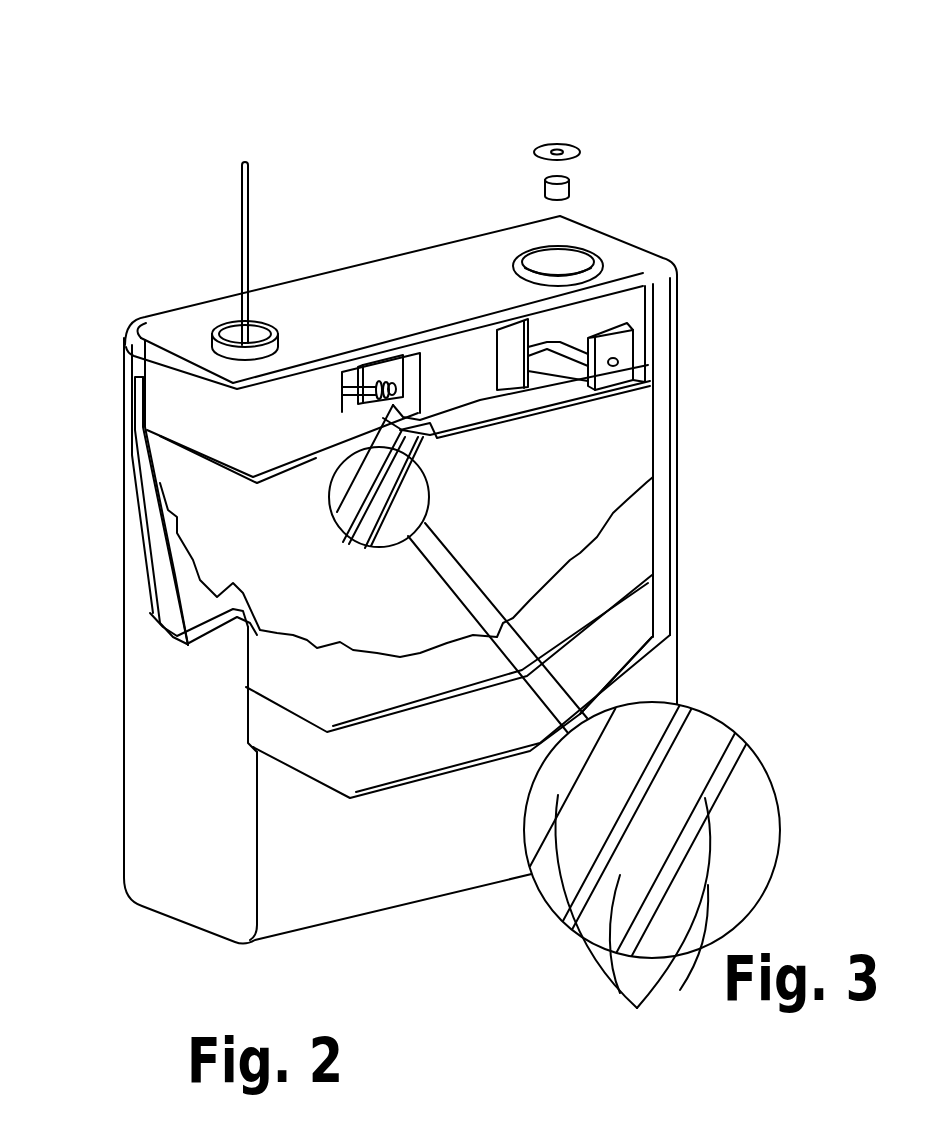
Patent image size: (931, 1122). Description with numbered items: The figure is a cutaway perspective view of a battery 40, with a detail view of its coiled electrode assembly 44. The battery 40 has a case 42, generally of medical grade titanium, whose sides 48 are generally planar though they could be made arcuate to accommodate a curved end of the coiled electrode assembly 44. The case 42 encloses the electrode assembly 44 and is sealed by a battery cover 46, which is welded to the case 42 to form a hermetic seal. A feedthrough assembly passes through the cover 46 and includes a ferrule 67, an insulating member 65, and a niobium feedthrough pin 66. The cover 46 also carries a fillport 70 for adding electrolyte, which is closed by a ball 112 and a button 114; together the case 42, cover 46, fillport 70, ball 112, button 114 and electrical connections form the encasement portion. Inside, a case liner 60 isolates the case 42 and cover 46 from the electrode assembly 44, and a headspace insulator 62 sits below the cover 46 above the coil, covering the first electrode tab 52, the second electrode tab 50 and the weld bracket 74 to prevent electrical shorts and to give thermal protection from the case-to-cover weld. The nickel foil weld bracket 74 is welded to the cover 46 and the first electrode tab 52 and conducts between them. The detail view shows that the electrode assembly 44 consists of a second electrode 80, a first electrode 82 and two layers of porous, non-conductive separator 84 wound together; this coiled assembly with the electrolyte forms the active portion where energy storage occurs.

In FIG. 2, the battery 40 is at (468, 85).
In FIG. 2, the case 42 is at (123, 793).
In FIG. 2, the electrode assembly 44 is at (587, 573).
In FIG. 2, the battery cover 46 is at (157, 338).
In FIG. 2, the sides 48 is at (283, 930).
In FIG. 2, the second electrode tab 50 is at (395, 375).
In FIG. 2, the first electrode tab 52 is at (600, 353).
In FIG. 2, the case liner 60 is at (610, 640).
In FIG. 2, the headspace insulator 62 is at (200, 423).
In FIG. 2, the insulating member 65 is at (230, 337).
In FIG. 2, the feedthrough pin 66 is at (248, 232).
In FIG. 2, the ferrule 67 is at (278, 337).
In FIG. 2, the fillport 70 is at (562, 267).
In FIG. 2, the weld bracket 74 is at (618, 362).
In FIG. 3, the second electrode 80 is at (643, 765).
In FIG. 3, the first electrode 82 is at (703, 798).
In FIG. 2, the separator material 84 is at (560, 482).
In FIG. 3, the separator material 84 is at (638, 867).
In FIG. 2, the ball 112 is at (582, 188).
In FIG. 2, the button 114 is at (583, 152).